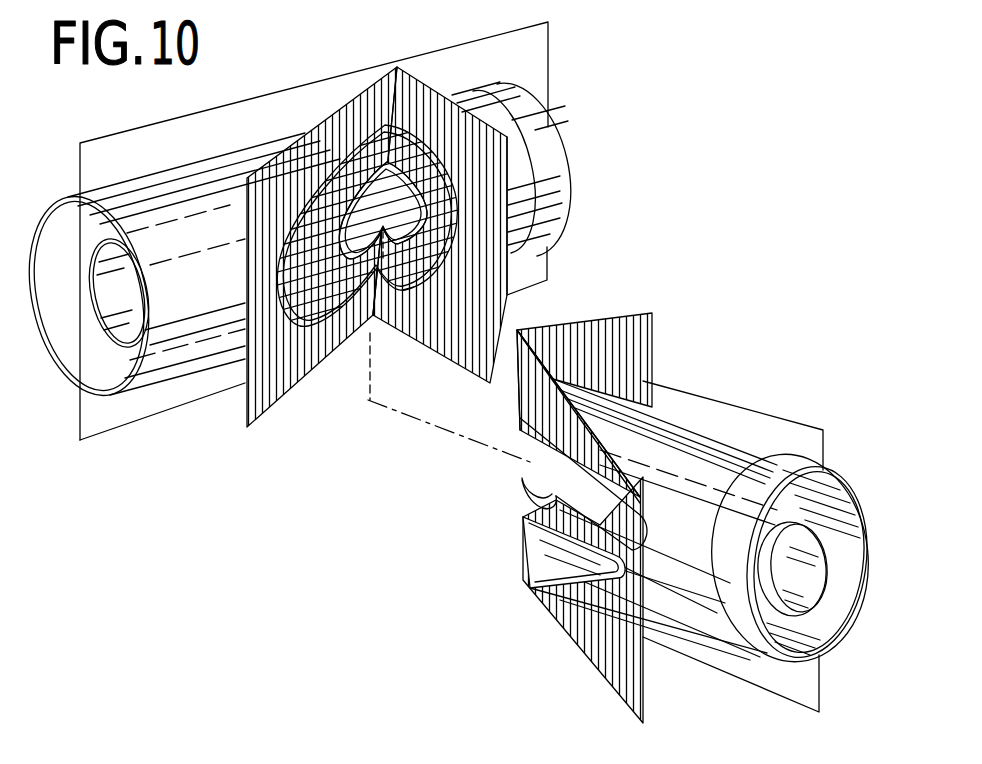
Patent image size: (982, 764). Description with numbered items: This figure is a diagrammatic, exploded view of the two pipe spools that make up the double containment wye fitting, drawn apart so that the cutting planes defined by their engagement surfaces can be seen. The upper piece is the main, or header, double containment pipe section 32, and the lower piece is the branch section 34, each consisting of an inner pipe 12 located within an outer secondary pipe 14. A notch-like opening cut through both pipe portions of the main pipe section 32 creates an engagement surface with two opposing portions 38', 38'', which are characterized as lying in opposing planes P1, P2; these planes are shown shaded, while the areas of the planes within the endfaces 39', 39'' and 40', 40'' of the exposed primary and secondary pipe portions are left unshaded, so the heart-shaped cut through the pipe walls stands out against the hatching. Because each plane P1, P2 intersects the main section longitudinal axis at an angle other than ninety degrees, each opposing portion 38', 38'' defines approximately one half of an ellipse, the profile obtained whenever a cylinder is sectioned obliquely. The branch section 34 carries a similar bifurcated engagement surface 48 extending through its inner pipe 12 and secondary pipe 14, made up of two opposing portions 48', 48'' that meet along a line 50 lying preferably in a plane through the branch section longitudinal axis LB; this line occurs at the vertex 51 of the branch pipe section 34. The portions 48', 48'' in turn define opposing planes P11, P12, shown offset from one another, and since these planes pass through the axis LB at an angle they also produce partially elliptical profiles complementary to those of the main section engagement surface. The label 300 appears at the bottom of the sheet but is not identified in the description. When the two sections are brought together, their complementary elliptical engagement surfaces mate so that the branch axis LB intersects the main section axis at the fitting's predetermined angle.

The inner pipe 12 is at (100, 320).
The secondary pipe 14 is at (65, 195).
The main double containment pipe section 32 is at (206, 249).
The branch section 34 is at (696, 528).
The engagement surface opposing portion 38' is at (322, 247).
The engagement surface opposing portion 38'' is at (440, 228).
The endface 39' is at (341, 221).
The endface 39'' is at (470, 99).
The endface 40' is at (361, 346).
The endface 40'' is at (383, 139).
The bifurcated engagement surface 48 is at (538, 552).
The engagement surface opposing portion 48' is at (516, 600).
The engagement surface opposing portion 48'' is at (611, 360).
The line 50 is at (517, 330).
The vertex 51 is at (525, 330).
The plane P1 is at (250, 398).
The plane P2 is at (500, 180).
The plane P11 is at (623, 657).
The plane P12 is at (652, 387).
The branch section longitudinal axis LB is at (795, 713).
The assembly 300 is at (460, 758).